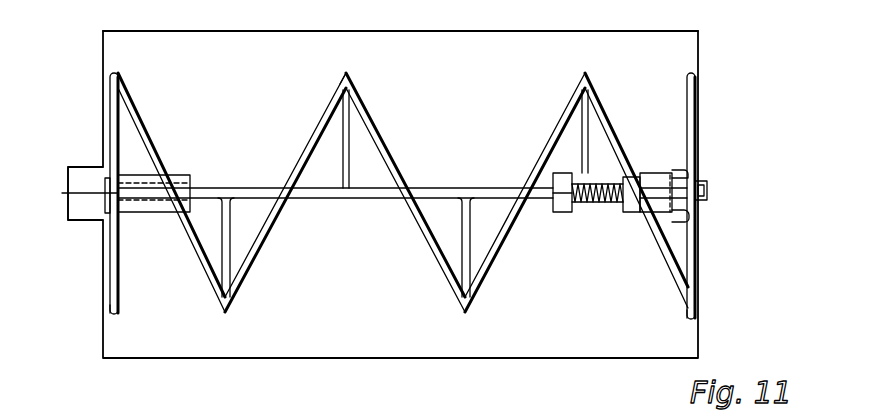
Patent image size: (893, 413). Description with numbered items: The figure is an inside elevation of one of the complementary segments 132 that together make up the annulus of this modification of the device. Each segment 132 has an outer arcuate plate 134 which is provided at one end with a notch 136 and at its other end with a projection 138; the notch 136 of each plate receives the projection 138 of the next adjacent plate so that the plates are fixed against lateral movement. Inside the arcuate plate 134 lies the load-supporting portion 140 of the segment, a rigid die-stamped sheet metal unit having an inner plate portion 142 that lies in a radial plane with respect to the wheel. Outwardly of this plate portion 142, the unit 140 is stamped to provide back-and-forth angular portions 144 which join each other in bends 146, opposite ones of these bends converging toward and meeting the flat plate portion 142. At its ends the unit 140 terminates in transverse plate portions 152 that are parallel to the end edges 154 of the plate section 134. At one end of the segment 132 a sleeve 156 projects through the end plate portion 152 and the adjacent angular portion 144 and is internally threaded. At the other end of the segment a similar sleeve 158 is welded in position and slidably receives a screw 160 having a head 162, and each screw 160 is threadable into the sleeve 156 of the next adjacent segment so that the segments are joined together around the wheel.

The complementary segment 132 is at (604, 18).
The outer arcuate plate 134 is at (638, 52).
The notch 136 is at (680, 216).
The projection 138 is at (62, 193).
The load-supporting portion 140 is at (388, 138).
The inner plate portion 142 is at (481, 187).
The angular portions 144 is at (395, 163).
The bends 146 is at (350, 77).
The transverse plate portions 152 is at (116, 143).
The end edges 154 is at (109, 302).
The sleeve 156 is at (183, 175).
The sleeve 158 is at (657, 167).
The screw 160 is at (707, 192).
The head 162 is at (558, 213).